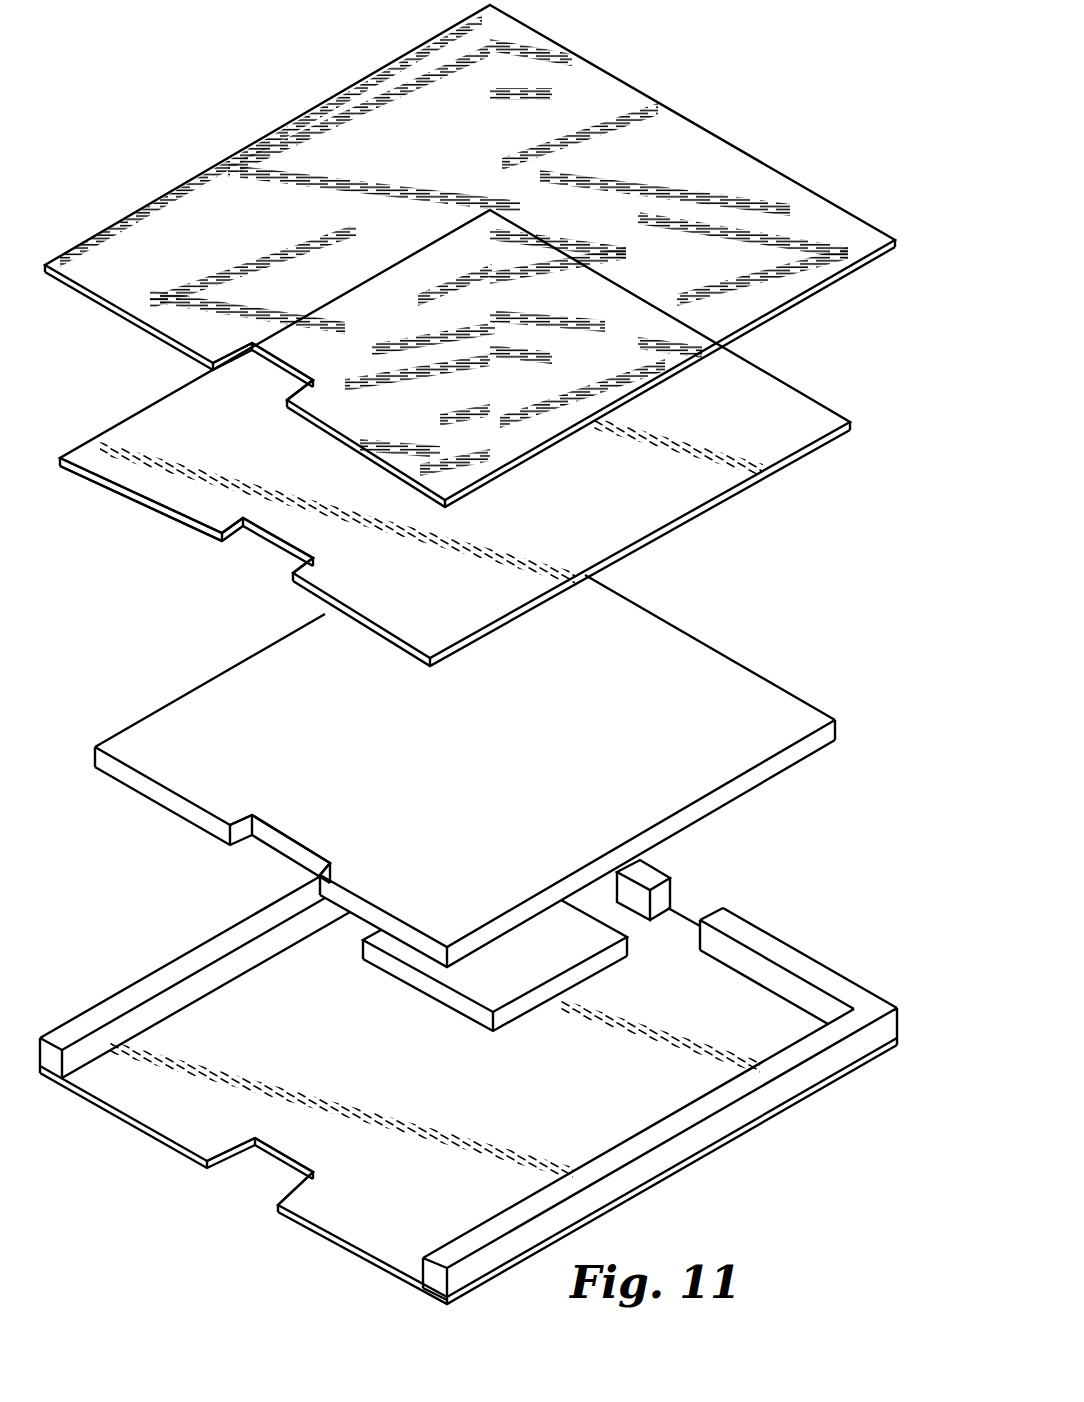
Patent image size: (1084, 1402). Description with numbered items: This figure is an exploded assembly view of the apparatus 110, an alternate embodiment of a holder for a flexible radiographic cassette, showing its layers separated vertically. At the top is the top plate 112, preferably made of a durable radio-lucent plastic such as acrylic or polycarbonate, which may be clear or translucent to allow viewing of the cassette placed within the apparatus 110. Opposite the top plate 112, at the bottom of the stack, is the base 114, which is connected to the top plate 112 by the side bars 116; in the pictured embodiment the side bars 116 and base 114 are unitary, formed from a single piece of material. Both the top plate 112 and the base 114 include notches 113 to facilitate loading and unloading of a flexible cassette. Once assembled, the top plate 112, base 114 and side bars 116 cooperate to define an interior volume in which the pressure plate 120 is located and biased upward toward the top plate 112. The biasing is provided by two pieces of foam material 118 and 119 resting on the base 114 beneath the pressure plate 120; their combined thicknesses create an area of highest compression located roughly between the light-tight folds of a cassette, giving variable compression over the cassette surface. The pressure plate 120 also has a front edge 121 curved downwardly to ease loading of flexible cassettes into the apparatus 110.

The apparatus 110 is at (468, 654).
The top plate 112 is at (603, 90).
The notches 113 is at (281, 359).
The base 114 is at (412, 1211).
The side bars 116 is at (72, 1032).
The foam material 118 is at (585, 943).
The foam material 119 is at (742, 690).
The pressure plate 120 is at (800, 408).
The front edge 121 is at (130, 491).